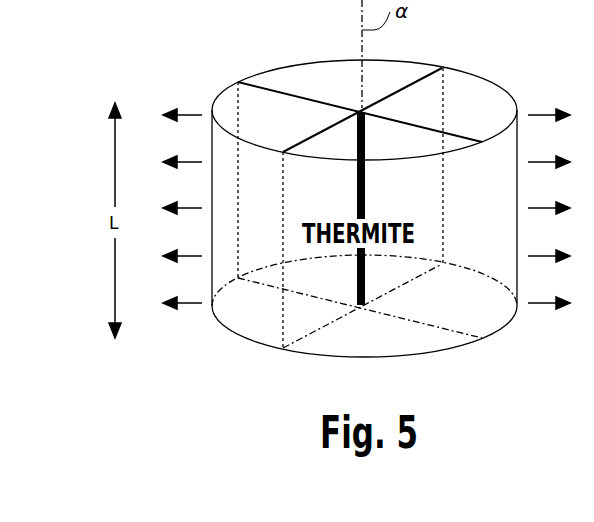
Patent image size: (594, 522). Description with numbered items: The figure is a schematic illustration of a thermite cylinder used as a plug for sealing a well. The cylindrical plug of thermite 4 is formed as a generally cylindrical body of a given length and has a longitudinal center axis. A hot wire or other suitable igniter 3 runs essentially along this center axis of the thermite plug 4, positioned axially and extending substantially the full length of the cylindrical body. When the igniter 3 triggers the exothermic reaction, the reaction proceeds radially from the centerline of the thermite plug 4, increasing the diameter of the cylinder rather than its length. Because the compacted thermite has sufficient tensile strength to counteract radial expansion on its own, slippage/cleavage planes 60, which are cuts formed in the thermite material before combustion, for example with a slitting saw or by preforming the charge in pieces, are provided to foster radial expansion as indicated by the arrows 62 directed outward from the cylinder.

The igniter 3 is at (340, 107).
The thermite plug 4 is at (280, 80).
The slippage/cleavage planes 60 is at (462, 135).
The radial expansion 62 is at (365, 207).